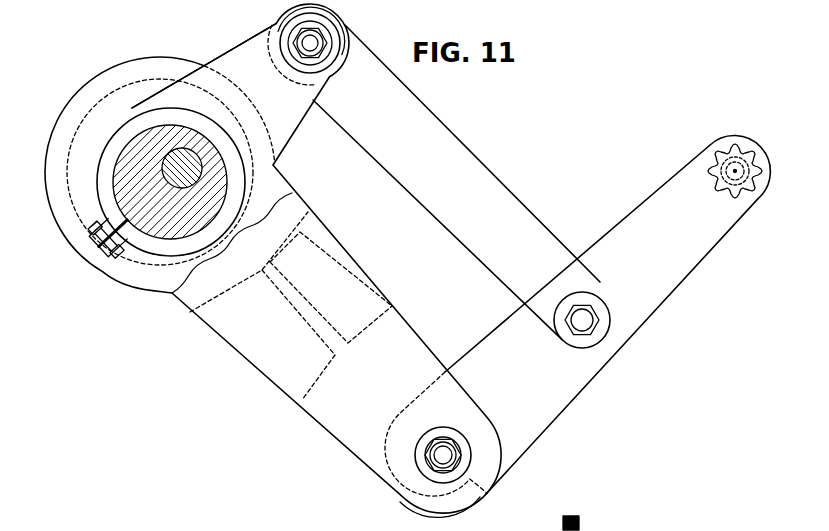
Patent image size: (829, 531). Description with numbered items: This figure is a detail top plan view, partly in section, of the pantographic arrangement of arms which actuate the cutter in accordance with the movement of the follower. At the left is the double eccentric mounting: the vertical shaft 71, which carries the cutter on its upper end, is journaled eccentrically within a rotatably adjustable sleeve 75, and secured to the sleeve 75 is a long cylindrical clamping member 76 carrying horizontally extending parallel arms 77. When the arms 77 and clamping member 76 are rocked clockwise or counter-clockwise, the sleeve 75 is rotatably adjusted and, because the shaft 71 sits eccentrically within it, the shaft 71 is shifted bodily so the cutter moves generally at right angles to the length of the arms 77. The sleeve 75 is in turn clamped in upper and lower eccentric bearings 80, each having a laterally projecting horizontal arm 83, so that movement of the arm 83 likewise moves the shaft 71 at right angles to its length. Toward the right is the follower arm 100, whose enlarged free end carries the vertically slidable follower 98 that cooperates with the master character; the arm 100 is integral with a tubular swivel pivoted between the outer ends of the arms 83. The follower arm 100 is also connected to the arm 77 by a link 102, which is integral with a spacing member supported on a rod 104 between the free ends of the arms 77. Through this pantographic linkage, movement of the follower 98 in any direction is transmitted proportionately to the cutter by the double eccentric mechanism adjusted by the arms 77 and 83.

The vertical shaft 71 is at (186, 158).
The sleeve 75 is at (163, 238).
The clamping member 76 is at (104, 162).
The arms 77 is at (262, 46).
The eccentric bearings 80 is at (85, 200).
The horizontal arm 83 is at (343, 251).
The follower 98 is at (727, 179).
The arm 100 is at (690, 270).
The link 102 is at (485, 183).
The rod 104 is at (312, 43).